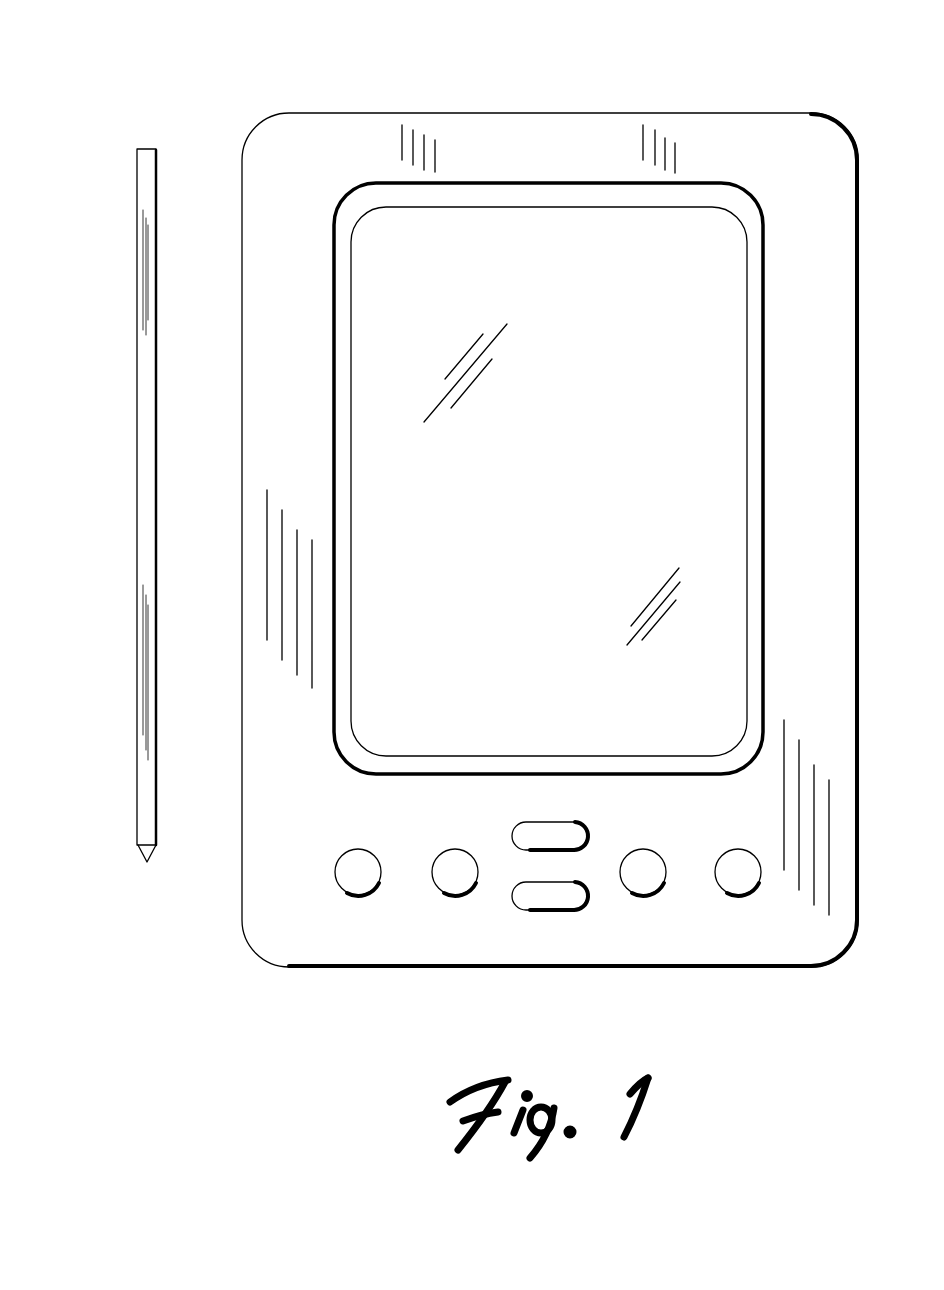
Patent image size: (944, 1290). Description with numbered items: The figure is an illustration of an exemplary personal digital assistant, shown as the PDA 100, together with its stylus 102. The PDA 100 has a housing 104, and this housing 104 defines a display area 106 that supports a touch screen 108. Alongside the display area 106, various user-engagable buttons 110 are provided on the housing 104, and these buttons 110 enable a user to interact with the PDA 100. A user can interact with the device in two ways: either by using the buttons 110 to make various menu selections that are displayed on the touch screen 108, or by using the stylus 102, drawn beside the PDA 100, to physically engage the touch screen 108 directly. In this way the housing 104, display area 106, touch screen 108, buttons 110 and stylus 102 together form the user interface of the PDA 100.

The PDA 100 is at (550, 485).
The stylus 102 is at (147, 147).
The housing 104 is at (548, 112).
The display area 106 is at (548, 182).
The touch screen 108 is at (576, 493).
The user-engagable buttons 110 is at (370, 822).